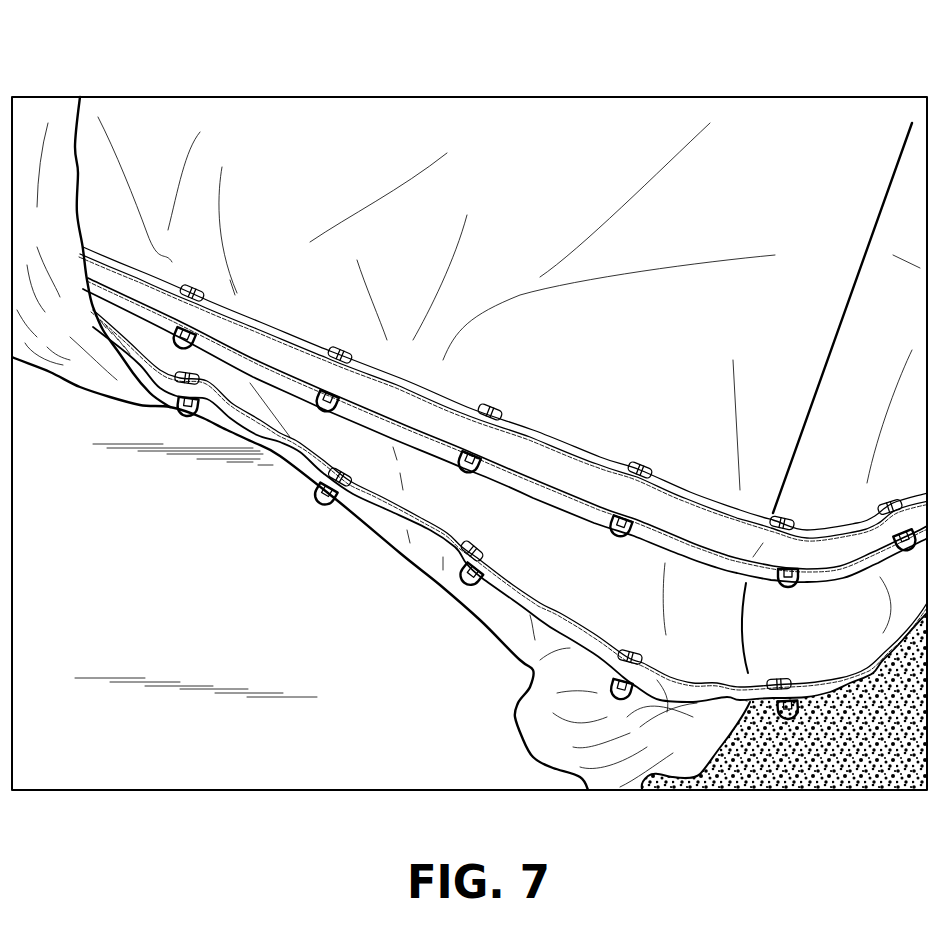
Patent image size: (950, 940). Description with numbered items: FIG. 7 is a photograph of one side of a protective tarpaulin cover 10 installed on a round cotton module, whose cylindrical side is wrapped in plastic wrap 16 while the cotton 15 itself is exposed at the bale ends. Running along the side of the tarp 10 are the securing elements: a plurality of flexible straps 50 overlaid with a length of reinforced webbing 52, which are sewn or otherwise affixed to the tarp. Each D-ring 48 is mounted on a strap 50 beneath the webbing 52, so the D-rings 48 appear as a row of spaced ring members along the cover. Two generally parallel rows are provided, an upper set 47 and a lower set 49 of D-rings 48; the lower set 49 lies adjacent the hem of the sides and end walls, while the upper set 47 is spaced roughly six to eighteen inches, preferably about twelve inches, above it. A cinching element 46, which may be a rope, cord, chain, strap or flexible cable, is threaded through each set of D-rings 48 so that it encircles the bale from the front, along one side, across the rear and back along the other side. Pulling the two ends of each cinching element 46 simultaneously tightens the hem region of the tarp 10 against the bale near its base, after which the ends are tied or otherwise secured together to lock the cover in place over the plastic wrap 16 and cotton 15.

The protective tarpaulin cover 10 is at (793, 123).
The cotton 15 is at (773, 760).
The plastic wrap 16 is at (667, 757).
The cinching element 46 is at (228, 390).
The upper set of D-rings 47 is at (618, 538).
The D-ring 48 is at (322, 508).
The lower set of D-rings 49 is at (465, 590).
The flexible strap 50 is at (500, 406).
The reinforced webbing 52 is at (568, 458).